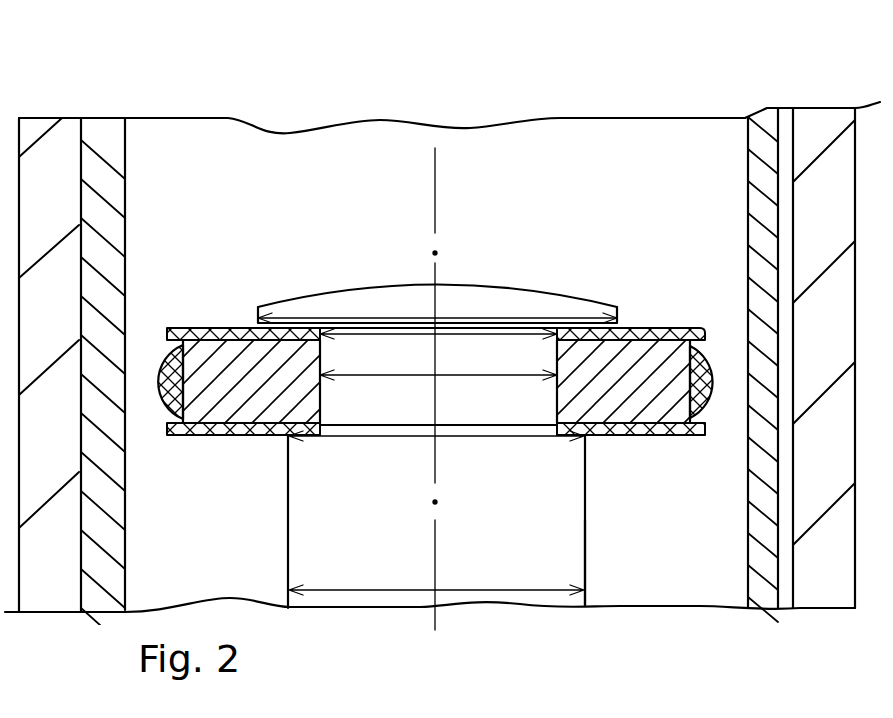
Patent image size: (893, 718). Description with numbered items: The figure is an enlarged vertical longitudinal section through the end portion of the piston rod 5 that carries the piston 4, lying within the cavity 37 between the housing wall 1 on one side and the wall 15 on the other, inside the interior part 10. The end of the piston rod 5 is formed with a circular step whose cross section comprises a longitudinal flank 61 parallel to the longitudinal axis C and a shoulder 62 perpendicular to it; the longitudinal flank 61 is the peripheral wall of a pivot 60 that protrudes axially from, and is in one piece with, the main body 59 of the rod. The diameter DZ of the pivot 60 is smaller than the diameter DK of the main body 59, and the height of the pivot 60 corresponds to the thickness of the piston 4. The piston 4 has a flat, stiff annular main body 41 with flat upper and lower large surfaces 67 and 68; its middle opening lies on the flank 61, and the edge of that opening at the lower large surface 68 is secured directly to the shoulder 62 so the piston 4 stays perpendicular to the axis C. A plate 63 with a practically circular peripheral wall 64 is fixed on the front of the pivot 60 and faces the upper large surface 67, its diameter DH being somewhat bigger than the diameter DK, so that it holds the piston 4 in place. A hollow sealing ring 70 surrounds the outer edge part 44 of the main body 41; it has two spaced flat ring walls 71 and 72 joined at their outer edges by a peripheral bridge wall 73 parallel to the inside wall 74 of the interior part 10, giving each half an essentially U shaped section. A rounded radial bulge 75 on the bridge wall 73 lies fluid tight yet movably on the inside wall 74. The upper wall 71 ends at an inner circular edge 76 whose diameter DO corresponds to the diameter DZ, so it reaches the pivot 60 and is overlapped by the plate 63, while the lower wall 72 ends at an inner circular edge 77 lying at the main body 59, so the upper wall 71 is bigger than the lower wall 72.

The housing wall 1 is at (58, 147).
The interior part 10 is at (147, 157).
The housing wall 15 is at (787, 136).
The cavity 37 is at (262, 181).
The piston 4 is at (185, 310).
The main body 41 is at (338, 350).
The plate 63 is at (535, 290).
The peripheral wall 64 is at (617, 310).
The upper large surface 67 is at (575, 333).
The upper interior circular edge 76 is at (543, 327).
The upper ring wall 71 is at (677, 327).
The inside wall 74 is at (750, 180).
The bulge 75 is at (725, 340).
The outer edge part 44 is at (210, 387).
The seal 70 is at (258, 440).
The lower ring wall 72 is at (632, 442).
The peripheral wall 73 is at (707, 438).
The longitudinal flank 61 is at (320, 407).
The shoulder 62 is at (405, 425).
The pivot 60 is at (385, 413).
The lower interior circular edge 77 is at (580, 437).
The lower large surface 68 is at (587, 483).
The main body 59 is at (341, 521).
The piston rod 5 is at (587, 553).
The longitudinal axis C is at (455, 408).
The diameter of the peripheral wall of the plate DH is at (406, 318).
The diameter of the upper interior circular edge DO is at (438, 358).
The diameter of the pivot DZ is at (436, 408).
The diameter of the main body of the piston rod DK is at (436, 573).